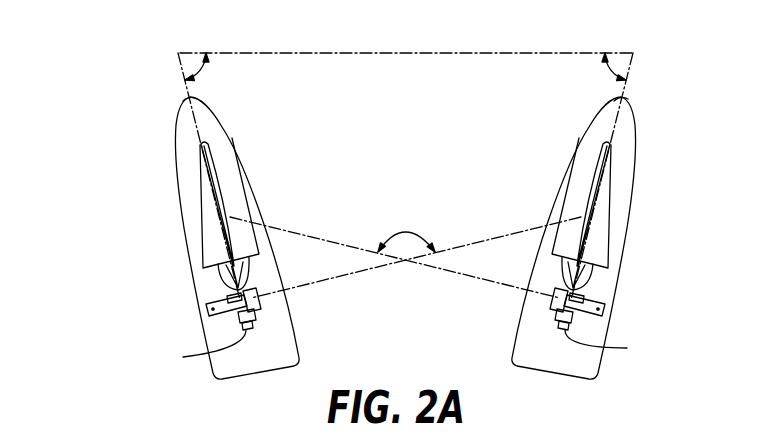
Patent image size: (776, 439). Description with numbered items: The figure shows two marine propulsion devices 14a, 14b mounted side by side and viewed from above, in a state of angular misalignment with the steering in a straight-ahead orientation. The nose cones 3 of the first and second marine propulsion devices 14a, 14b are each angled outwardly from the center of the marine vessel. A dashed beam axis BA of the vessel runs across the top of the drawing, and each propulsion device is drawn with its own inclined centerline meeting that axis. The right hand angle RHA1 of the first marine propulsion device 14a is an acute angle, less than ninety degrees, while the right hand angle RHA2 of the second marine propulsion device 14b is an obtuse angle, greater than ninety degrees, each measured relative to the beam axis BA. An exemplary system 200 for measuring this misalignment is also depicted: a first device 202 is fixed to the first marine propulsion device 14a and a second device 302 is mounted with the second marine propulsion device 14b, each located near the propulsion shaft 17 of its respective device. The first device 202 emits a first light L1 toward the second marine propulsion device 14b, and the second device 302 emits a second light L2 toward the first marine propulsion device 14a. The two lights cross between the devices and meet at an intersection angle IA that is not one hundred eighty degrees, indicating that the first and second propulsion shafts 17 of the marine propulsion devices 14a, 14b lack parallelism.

The system 200 is at (666, 51).
The first marine propulsion device 14a is at (174, 134).
The second marine propulsion device 14b is at (643, 135).
The nose cone 3 is at (186, 97).
The first device 202 is at (212, 288).
The second device 302 is at (598, 288).
The propulsion shaft 17 is at (403, 349).
The beam axis BA is at (407, 54).
The right hand angle of the first marine propulsion device RHA1 is at (202, 72).
The right hand angle of the second marine propulsion device RHA2 is at (610, 72).
The first light L1 is at (352, 277).
The second light L2 is at (458, 276).
The intersection angle IA is at (406, 227).